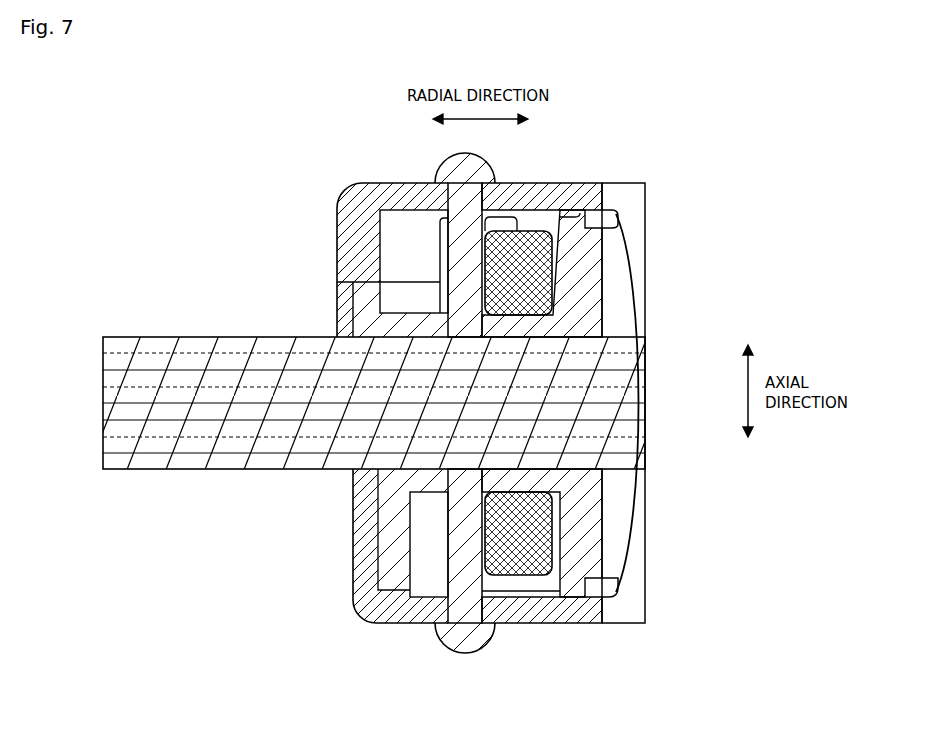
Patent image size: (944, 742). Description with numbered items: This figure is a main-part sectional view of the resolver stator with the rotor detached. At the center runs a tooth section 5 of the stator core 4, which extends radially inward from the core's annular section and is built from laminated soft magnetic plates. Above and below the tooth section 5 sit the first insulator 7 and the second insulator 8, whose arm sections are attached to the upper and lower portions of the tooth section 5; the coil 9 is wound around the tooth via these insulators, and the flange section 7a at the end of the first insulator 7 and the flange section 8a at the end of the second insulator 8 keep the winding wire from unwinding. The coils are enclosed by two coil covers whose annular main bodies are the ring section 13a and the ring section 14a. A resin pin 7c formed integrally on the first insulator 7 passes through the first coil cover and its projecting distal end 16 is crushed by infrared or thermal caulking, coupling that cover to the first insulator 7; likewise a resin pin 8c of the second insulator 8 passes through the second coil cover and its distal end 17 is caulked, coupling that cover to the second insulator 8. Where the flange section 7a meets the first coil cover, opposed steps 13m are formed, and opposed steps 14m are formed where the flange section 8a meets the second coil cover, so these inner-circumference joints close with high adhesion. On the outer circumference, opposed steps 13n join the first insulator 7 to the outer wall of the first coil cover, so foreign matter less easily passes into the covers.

The distal end 16 is at (455, 161).
The coil 9 is at (532, 240).
The ring section 13a is at (570, 195).
The step 13m is at (604, 222).
The step 13n is at (358, 279).
The first insulator 7 is at (498, 260).
The flange section 7a is at (593, 283).
The resin pin 7c is at (460, 252).
The tooth section 5 is at (620, 394).
The stator core 4 is at (412, 403).
The second insulator 8 is at (498, 546).
The flange section 8a is at (593, 538).
The resin pin 8c is at (462, 560).
The step 14m is at (618, 587).
The ring section 14a is at (567, 622).
The distal end 17 is at (463, 654).